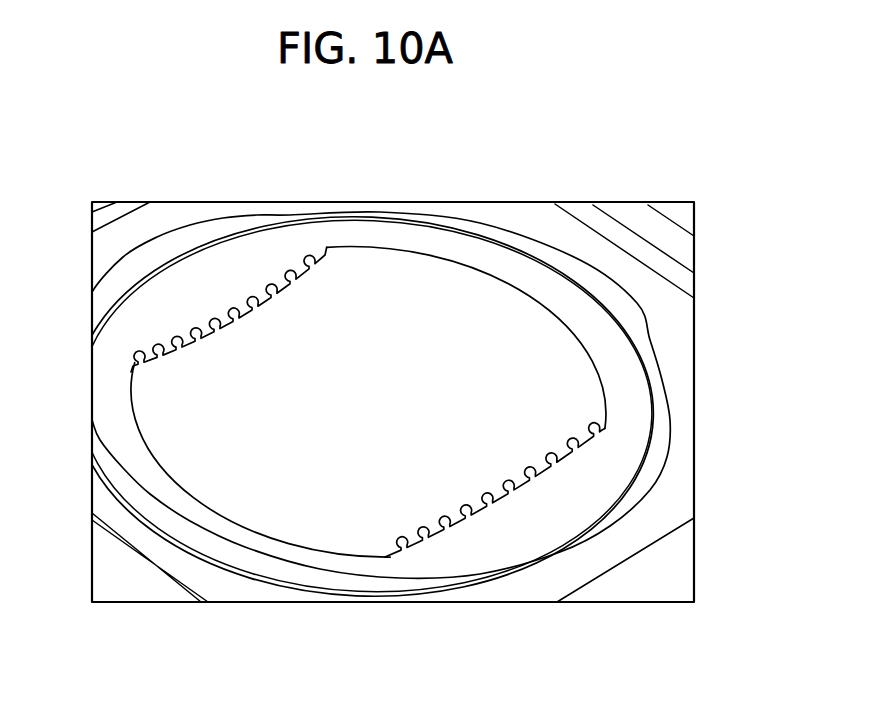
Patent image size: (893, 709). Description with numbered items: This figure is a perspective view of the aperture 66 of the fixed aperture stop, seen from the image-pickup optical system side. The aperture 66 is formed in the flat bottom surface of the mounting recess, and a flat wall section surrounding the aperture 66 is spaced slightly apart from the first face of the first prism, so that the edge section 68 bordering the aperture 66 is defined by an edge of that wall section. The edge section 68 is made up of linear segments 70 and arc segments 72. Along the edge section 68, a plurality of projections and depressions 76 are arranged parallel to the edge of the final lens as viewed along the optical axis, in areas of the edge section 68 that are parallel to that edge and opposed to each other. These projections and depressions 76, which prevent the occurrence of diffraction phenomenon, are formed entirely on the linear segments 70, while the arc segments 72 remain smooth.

The aperture 66 is at (267, 533).
The edge section 68 is at (609, 426).
The linear segments 70 is at (227, 320).
The arc segments 72 is at (553, 322).
The projections and depressions 76 is at (287, 278).